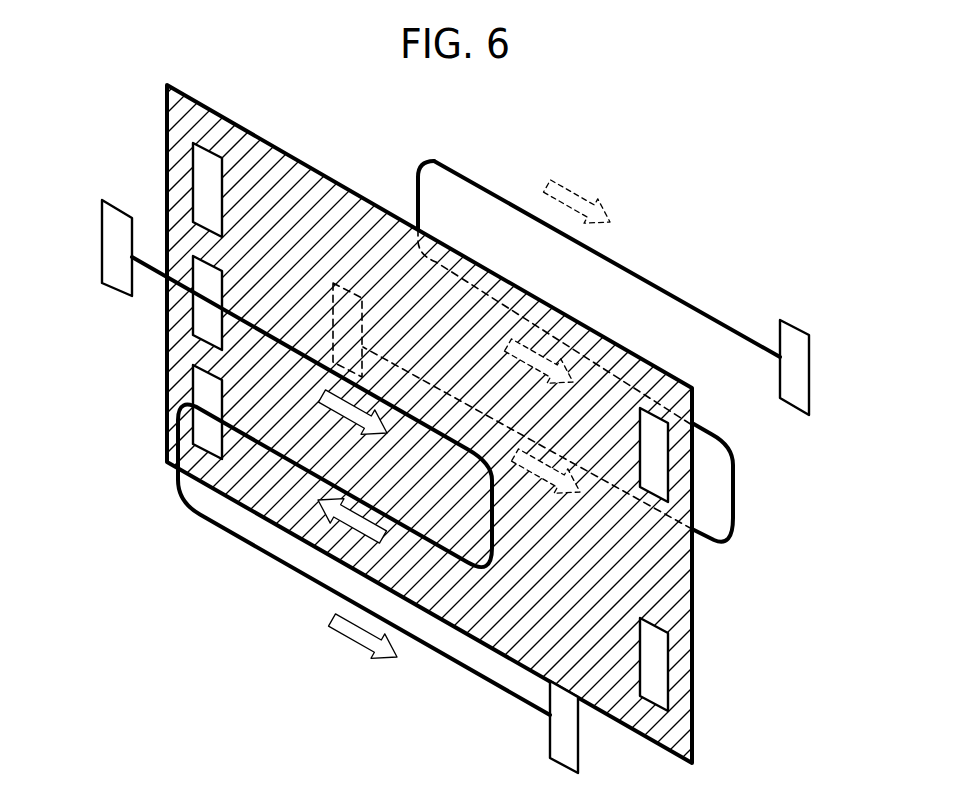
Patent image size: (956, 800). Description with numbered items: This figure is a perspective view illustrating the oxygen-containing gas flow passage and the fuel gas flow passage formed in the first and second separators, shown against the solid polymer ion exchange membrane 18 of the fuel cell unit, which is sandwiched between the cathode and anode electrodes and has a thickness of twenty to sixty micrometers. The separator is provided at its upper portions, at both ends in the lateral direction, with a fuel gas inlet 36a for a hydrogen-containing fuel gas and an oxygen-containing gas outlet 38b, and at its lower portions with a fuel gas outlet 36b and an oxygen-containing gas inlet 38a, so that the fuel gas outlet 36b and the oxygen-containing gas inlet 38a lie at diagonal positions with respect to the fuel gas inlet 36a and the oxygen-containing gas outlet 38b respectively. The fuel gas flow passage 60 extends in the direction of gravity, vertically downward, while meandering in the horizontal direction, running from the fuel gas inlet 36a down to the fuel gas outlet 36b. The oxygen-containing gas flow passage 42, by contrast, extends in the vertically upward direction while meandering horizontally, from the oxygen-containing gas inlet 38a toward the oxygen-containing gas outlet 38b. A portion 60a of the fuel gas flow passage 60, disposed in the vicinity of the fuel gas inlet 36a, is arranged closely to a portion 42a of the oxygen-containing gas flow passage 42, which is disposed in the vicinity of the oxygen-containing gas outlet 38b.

The solid polymer ion exchange membrane 18 is at (696, 596).
The fuel gas inlet 36a is at (203, 180).
The fuel gas outlet 36b is at (651, 668).
The oxygen-containing gas inlet 38a is at (213, 387).
The oxygen-containing gas outlet 38b is at (793, 368).
The oxygen-containing gas flow passage 42 is at (585, 351).
The portion of the oxygen-containing gas flow passage 42a is at (653, 282).
The fuel gas flow passage 60 is at (257, 548).
The portion of the fuel gas flow passage 60a is at (203, 303).